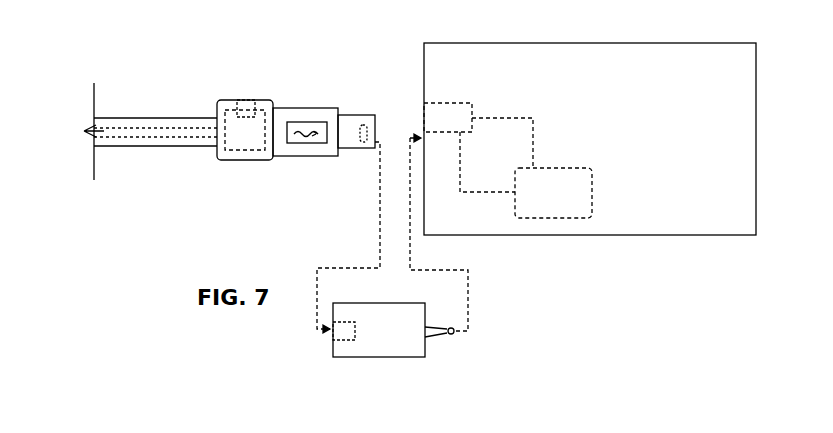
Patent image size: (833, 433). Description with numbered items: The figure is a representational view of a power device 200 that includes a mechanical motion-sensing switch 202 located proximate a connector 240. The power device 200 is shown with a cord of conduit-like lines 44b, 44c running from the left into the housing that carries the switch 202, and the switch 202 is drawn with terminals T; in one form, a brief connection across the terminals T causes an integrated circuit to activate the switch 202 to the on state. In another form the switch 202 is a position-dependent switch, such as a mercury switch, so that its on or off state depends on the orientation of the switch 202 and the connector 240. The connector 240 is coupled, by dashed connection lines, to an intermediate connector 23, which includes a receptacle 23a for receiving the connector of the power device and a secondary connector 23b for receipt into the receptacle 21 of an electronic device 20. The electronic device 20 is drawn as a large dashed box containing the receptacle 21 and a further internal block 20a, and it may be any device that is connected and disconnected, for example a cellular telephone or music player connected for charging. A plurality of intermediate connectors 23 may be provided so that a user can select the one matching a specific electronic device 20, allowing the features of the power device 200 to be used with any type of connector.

The power device 200 is at (198, 200).
The first conduit/tube portion 44b is at (150, 118).
The second conduit/tube portion 44c is at (160, 147).
The mechanical motion-sensing switch 202 is at (267, 106).
The terminals T is at (236, 108).
The connector 240 is at (303, 165).
The intermediate connector 23 is at (395, 360).
The receptacle 23a is at (347, 340).
The secondary connector 23b is at (448, 338).
The electronic device 20 is at (548, 251).
The receptacle 21 is at (452, 103).
The sub-unit of base unit 20a is at (567, 168).